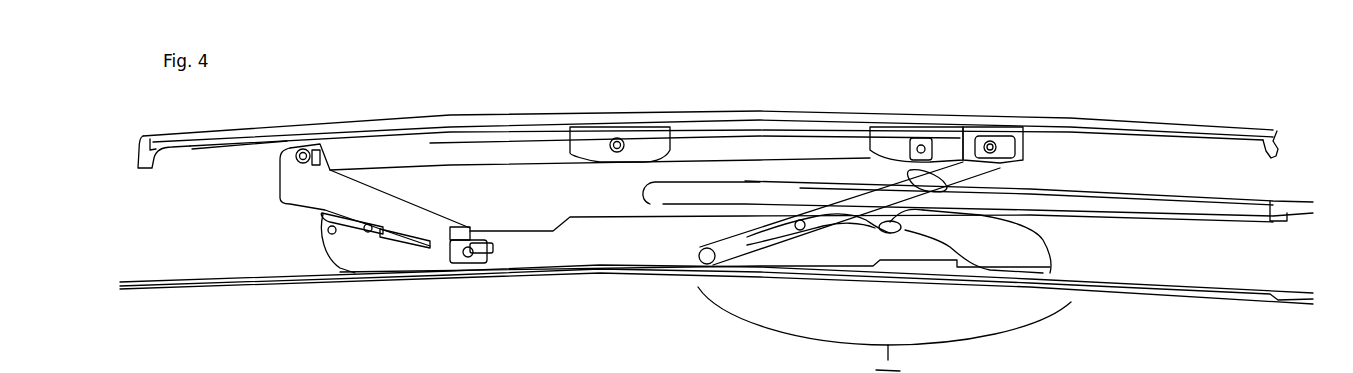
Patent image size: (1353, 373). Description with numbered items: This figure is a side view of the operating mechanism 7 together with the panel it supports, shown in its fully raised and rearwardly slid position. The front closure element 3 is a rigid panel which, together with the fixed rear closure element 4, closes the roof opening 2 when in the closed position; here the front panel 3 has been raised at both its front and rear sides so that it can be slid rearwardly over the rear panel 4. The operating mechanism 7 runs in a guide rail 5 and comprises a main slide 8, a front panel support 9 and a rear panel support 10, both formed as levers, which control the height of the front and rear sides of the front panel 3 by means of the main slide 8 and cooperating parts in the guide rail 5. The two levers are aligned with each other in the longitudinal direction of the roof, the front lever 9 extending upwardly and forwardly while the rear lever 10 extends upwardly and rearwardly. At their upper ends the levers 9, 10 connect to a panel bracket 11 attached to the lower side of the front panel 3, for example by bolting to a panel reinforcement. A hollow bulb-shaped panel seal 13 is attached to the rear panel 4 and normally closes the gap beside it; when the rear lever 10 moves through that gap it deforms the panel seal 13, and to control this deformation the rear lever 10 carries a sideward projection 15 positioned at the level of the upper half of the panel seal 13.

The roof opening 2 is at (545, 188).
The front closure element 3 is at (1073, 125).
The rear closure element 4 is at (1293, 207).
The guide rail 5 is at (1203, 290).
The operating mechanism 7 is at (483, 294).
The main slide 8 is at (617, 247).
The front panel support 9 is at (370, 207).
The rear panel support 10 is at (987, 180).
The panel bracket 11 is at (772, 148).
The panel seal 13 is at (1110, 188).
The sideward projection 15 is at (928, 187).